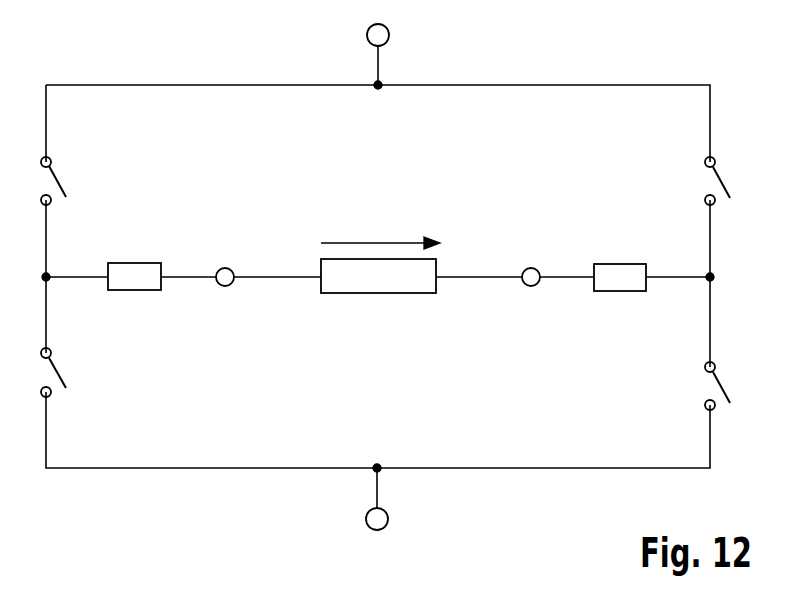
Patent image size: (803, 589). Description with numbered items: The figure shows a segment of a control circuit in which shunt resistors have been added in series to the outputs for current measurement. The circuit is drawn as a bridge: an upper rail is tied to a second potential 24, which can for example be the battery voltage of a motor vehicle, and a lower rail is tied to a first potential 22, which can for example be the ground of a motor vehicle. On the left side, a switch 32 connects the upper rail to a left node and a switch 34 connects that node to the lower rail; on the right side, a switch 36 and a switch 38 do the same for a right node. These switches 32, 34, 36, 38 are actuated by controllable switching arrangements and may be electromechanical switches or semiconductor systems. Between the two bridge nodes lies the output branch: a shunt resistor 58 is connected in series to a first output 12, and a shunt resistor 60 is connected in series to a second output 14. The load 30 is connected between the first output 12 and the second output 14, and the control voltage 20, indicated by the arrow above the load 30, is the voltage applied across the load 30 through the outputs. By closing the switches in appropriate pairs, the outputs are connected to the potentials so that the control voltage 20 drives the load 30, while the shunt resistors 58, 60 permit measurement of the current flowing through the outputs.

The first output 12 is at (222, 286).
The second output 14 is at (527, 287).
The control voltage 20 is at (378, 243).
The first potential 22 is at (366, 518).
The second potential 24 is at (367, 35).
The load 30 is at (373, 293).
The switch 32 is at (63, 188).
The switch 34 is at (63, 380).
The switch 36 is at (714, 178).
The switch 38 is at (714, 383).
The shunt resistor 58 is at (148, 263).
The shunt resistor 60 is at (606, 264).